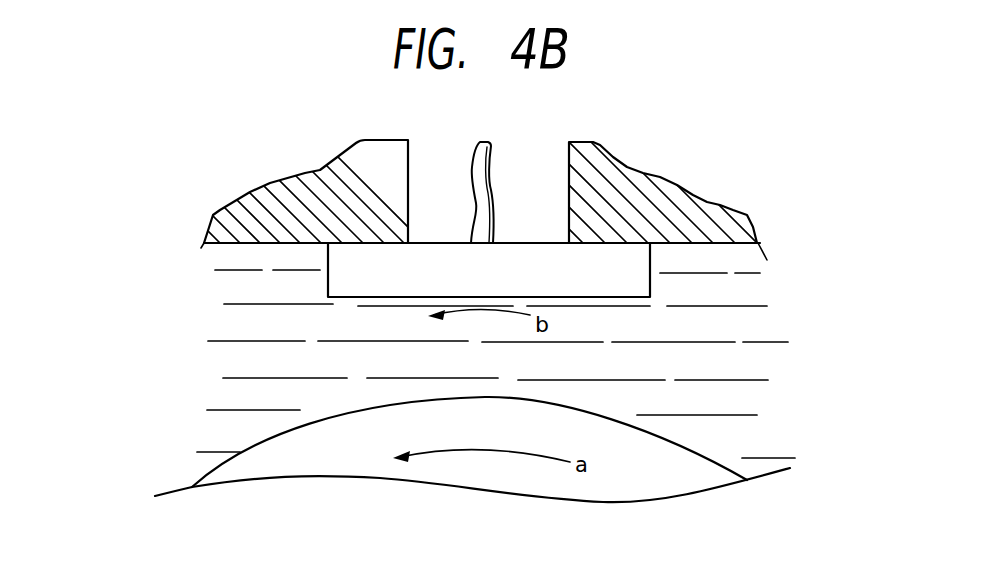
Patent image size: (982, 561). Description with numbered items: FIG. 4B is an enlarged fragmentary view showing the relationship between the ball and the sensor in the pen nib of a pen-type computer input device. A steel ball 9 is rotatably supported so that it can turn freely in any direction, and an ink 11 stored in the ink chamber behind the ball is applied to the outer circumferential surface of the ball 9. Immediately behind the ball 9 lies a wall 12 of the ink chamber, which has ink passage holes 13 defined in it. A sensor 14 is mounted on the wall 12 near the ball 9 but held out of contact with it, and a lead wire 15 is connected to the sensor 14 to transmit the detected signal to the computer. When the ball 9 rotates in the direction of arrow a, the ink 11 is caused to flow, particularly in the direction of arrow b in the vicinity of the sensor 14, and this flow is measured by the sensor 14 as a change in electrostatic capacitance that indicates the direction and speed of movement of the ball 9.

The steel ball 9 is at (695, 468).
The ink 11 is at (735, 328).
The wall 12 is at (228, 215).
The ink passage holes 13 is at (553, 210).
The sensor 14 is at (628, 263).
The lead wire 15 is at (488, 166).